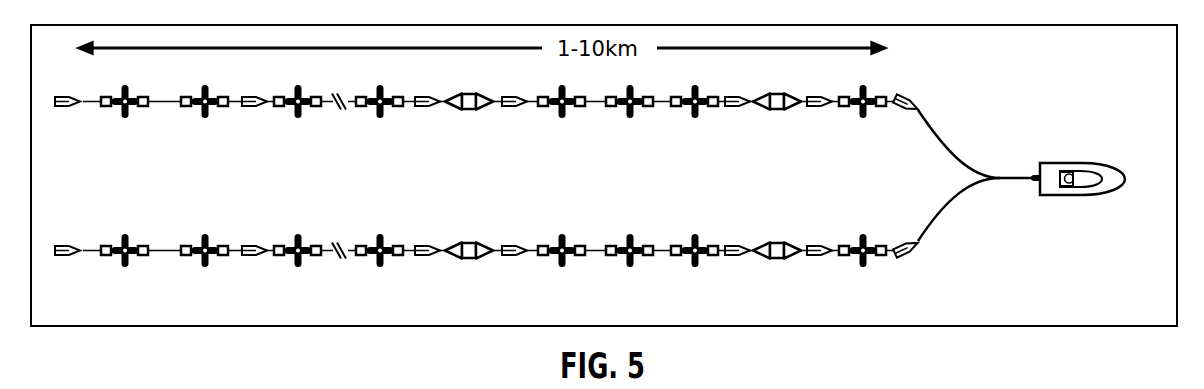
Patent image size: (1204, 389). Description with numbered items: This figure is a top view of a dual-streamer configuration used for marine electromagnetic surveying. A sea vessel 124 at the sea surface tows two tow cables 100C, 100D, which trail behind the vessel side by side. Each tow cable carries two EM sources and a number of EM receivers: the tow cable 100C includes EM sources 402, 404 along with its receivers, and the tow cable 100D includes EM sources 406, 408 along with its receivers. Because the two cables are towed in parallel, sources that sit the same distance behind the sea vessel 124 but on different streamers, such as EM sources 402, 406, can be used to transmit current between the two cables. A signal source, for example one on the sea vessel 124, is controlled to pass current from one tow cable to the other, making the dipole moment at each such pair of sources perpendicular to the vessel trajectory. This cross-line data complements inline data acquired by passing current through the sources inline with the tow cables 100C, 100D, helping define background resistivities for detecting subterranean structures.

The EM source 402 is at (780, 93).
The EM source 404 is at (472, 93).
The EM source 406 is at (778, 258).
The EM source 408 is at (468, 258).
The tow cable 100C is at (947, 145).
The tow cable 100D is at (952, 202).
The sea vessel 124 is at (1082, 167).